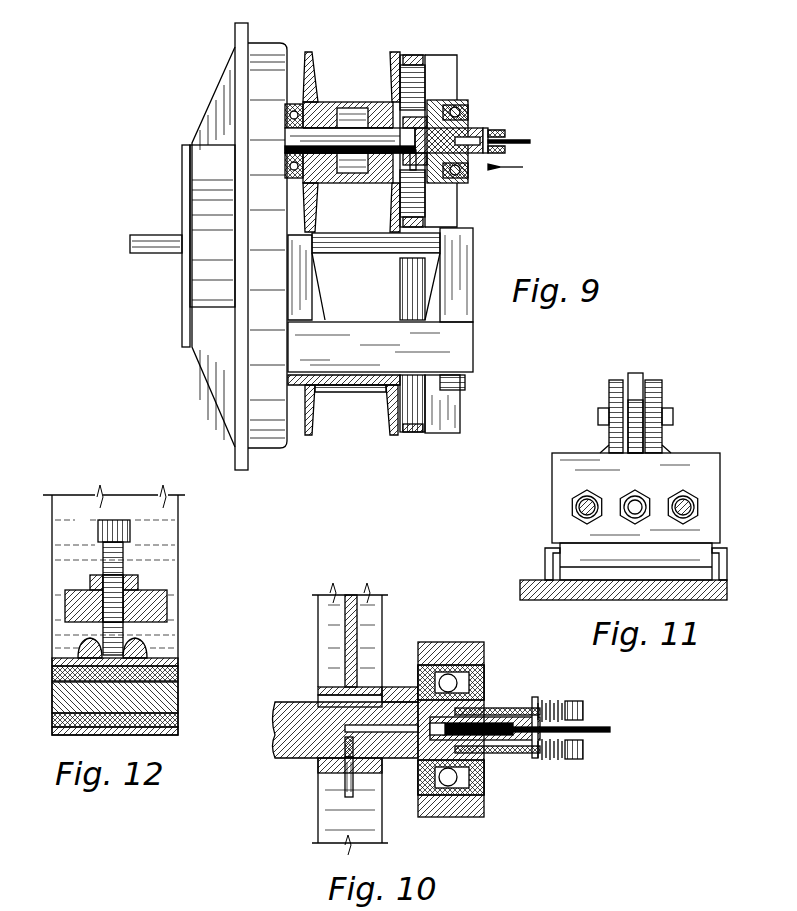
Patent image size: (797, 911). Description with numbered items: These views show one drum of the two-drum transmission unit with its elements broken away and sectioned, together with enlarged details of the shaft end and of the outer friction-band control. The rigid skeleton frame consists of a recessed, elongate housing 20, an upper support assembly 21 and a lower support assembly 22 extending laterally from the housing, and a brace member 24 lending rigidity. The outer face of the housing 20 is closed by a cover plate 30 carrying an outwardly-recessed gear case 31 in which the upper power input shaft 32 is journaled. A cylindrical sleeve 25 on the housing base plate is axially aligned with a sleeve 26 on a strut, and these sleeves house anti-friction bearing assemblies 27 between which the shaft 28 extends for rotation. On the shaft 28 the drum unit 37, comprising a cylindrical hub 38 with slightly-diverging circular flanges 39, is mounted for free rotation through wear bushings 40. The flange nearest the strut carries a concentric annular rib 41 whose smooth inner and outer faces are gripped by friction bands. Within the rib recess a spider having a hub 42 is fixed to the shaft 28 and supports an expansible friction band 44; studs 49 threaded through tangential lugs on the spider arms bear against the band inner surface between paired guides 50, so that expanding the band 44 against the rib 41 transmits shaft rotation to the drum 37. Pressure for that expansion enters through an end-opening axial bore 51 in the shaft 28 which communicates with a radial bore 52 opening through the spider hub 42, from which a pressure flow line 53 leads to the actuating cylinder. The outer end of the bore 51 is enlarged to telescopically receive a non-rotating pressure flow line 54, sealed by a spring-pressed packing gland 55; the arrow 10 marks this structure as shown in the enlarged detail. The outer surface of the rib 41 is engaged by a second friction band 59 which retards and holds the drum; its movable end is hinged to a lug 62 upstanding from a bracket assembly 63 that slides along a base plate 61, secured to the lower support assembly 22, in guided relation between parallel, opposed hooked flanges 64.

In FIG. 9, the arrow 10 is at (519, 168).
In FIG. 9, the housing 20 is at (261, 246).
In FIG. 9, the upper support assembly 21 is at (380, 300).
In FIG. 9, the lower support assembly 22 is at (445, 425).
In FIG. 9, the brace member 24 is at (352, 243).
In FIG. 9, the cylindrical sleeve 25 is at (300, 104).
In FIG. 9, the sleeve 26 is at (458, 100).
In FIG. 10, the sleeve 26 is at (445, 648).
In FIG. 9, the anti-friction bearing assembly 27 is at (468, 110).
In FIG. 10, the anti-friction bearing assembly 27 is at (470, 672).
In FIG. 9, the shaft 28 is at (345, 130).
In FIG. 10, the shaft 28 is at (305, 748).
In FIG. 9, the cover plate 30 is at (237, 78).
In FIG. 9, the gear case 31 is at (208, 246).
In FIG. 9, the upper power input shaft 32 is at (162, 254).
In FIG. 9, the drum unit 37 is at (362, 387).
In FIG. 9, the cylindrical hub 38 is at (366, 108).
In FIG. 9, the circular flange 39 is at (313, 60).
In FIG. 9, the wear bushing 40 is at (375, 152).
In FIG. 9, the annular rib 41 is at (425, 58).
In FIG. 12, the annular rib 41 is at (165, 700).
In FIG. 9, the spider hub 42 is at (414, 117).
In FIG. 10, the spider hub 42 is at (330, 775).
In FIG. 9, the friction band 44 is at (420, 208).
In FIG. 12, the friction band 44 is at (175, 663).
In FIG. 12, the stud 49 is at (128, 565).
In FIG. 12, the guide 50 is at (140, 645).
In FIG. 10, the axial bore 51 is at (403, 700).
In FIG. 10, the radial bore 52 is at (355, 740).
In FIG. 9, the pressure flow line 53 is at (416, 165).
In FIG. 10, the pressure flow line 53 is at (352, 796).
In FIG. 9, the pressure flow line 54 is at (520, 140).
In FIG. 10, the pressure flow line 54 is at (598, 725).
In FIG. 9, the spring-pressed packing gland 55 is at (478, 150).
In FIG. 10, the spring-pressed packing gland 55 is at (490, 748).
In FIG. 9, the friction band 59 is at (413, 54).
In FIG. 12, the friction band 59 is at (170, 735).
In FIG. 11, the base plate 61 is at (712, 595).
In FIG. 11, the lug 62 is at (664, 398).
In FIG. 11, the bracket assembly 63 is at (562, 477).
In FIG. 11, the hooked flange 64 is at (545, 556).